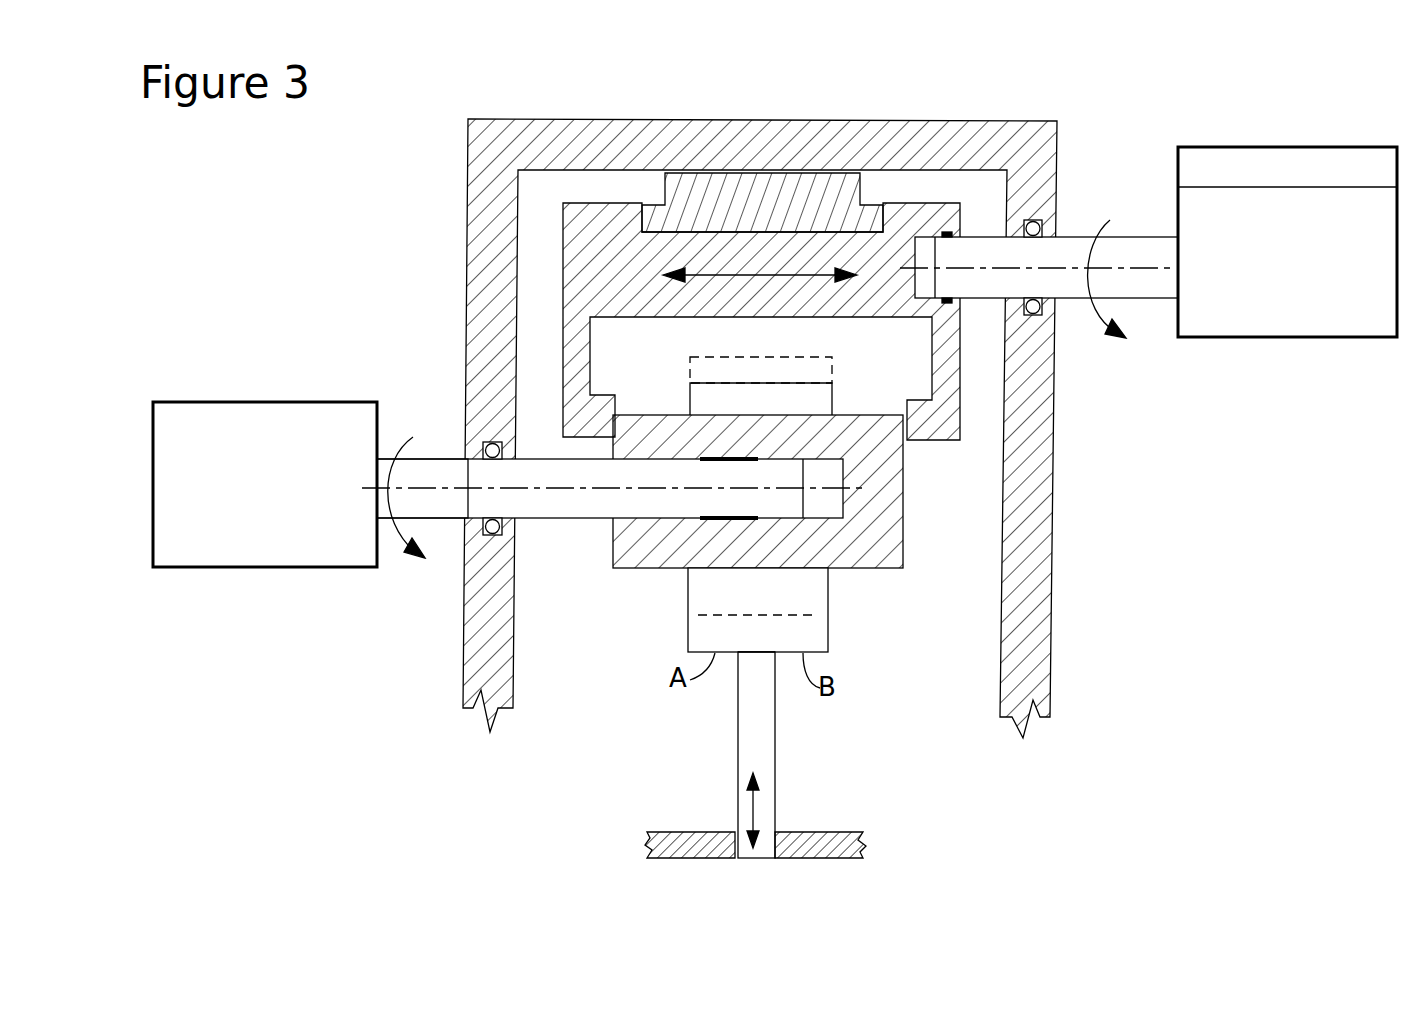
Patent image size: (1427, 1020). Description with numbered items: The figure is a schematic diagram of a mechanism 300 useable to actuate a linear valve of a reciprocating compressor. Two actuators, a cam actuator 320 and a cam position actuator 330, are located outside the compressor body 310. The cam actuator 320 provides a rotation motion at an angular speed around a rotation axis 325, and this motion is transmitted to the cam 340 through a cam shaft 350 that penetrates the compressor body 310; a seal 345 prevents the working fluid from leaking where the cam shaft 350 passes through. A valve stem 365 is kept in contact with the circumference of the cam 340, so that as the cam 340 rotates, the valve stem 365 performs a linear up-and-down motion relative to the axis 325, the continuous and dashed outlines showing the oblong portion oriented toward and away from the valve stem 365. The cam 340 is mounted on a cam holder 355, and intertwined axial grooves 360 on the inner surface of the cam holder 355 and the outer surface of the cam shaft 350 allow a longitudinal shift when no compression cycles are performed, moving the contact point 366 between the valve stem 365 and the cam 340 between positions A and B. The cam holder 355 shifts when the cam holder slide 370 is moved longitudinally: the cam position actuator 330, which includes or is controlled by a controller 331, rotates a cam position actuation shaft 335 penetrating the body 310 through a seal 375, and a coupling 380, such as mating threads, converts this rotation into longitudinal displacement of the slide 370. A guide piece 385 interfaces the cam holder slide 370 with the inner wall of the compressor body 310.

The mechanism 300 is at (252, 227).
The compressor body 310 is at (1007, 152).
The cam actuator 320 is at (253, 568).
The rotation axis 325 is at (389, 480).
The cam position actuator 330 is at (1282, 338).
The controller 331 is at (1337, 145).
The cam position actuation shaft 335 is at (1150, 252).
The cam 340 is at (825, 637).
The seal 345 is at (496, 522).
The cam shaft 350 is at (570, 502).
The cam holder 355 is at (887, 545).
The intertwined axial grooves 360 is at (733, 458).
The valve stem 365 is at (758, 772).
The contact point 366 is at (755, 655).
The cam holder slide 370 is at (937, 427).
The seal 375 is at (1035, 312).
The coupling 380 is at (947, 302).
The guide piece 385 is at (772, 192).